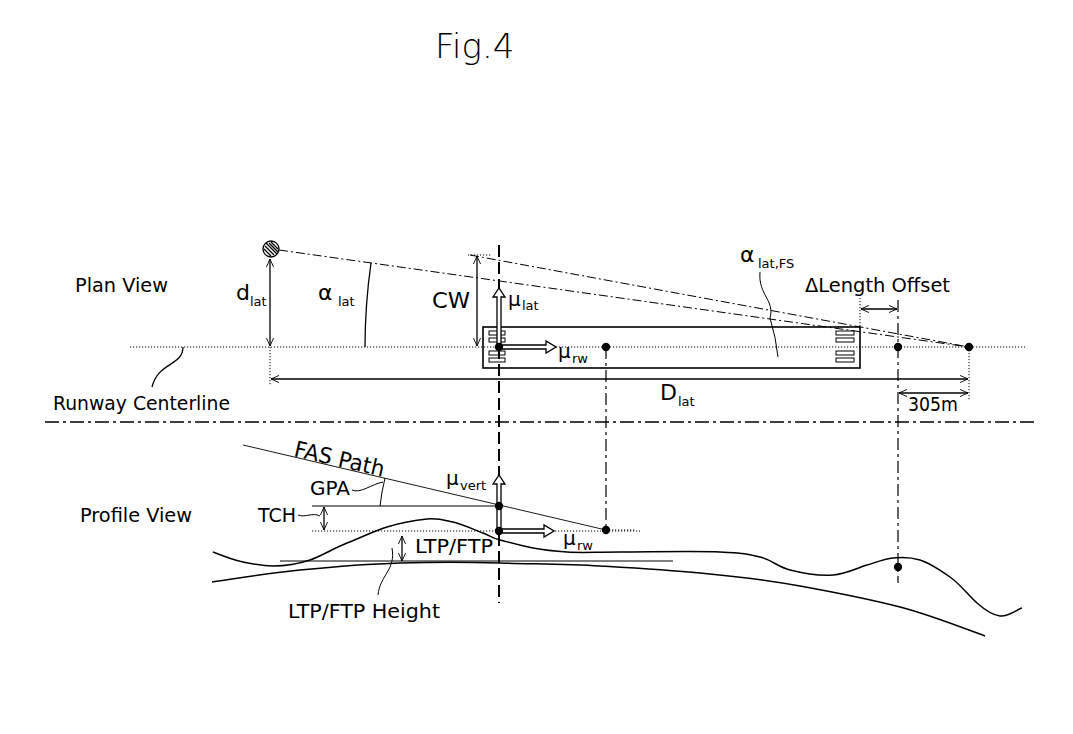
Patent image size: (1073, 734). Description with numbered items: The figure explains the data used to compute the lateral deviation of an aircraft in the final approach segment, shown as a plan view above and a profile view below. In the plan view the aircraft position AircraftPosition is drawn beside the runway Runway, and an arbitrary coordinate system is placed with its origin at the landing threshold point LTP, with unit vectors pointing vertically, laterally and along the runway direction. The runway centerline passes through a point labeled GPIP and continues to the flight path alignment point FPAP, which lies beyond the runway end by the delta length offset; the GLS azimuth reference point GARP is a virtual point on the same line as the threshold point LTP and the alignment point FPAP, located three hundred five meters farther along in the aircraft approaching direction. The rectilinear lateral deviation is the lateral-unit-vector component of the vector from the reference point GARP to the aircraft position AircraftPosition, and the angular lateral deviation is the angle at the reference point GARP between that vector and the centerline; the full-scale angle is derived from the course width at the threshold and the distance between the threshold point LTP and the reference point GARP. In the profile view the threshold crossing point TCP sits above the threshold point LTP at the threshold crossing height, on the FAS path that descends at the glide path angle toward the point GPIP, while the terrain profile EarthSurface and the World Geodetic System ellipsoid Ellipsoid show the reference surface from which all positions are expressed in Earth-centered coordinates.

The aircraft position AircraftPosition is at (264, 236).
The runway Runway is at (671, 347).
The landing threshold point/fictitious threshold point LTP is at (448, 355).
The glide path intercept point GPIP is at (630, 428).
The element FPAP is at (928, 441).
The GLS Azimuth Reference Point GARP is at (993, 358).
The earth's surface EarthSurface is at (846, 572).
The WGS84 ellipsoid Ellipsoid is at (598, 599).
The threshold crossing point TCP is at (523, 506).